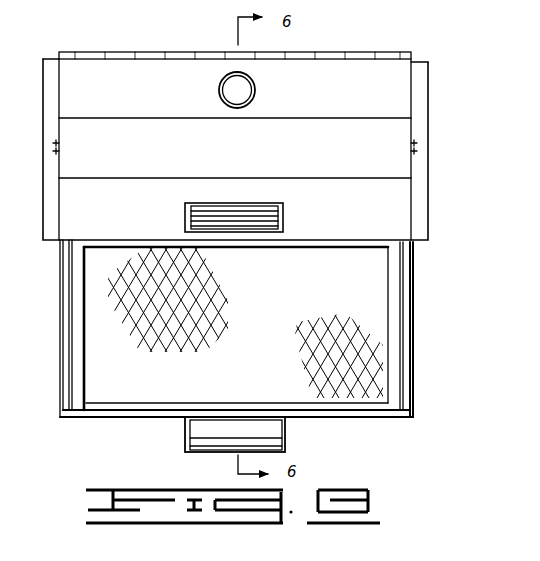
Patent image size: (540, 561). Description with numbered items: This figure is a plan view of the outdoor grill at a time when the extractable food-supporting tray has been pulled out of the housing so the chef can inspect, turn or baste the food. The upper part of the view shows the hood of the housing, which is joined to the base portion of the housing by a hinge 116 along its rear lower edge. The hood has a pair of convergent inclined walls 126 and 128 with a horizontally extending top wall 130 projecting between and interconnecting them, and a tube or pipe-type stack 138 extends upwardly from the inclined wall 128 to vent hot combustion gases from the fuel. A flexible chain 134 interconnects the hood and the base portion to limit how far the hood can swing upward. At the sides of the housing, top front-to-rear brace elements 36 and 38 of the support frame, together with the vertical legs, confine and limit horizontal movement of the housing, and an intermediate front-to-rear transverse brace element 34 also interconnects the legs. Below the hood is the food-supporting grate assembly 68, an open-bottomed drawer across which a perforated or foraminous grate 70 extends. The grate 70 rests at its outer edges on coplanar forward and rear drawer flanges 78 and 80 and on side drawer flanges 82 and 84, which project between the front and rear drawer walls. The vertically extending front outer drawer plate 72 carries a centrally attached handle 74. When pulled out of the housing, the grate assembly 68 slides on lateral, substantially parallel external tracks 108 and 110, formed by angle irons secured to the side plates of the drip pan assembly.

The front-to-rear transverse brace element 34 is at (214, 149).
The top front-to-rear brace element 36 is at (50, 70).
The top front-to-rear brace element 38 is at (420, 72).
The hinge 116 is at (118, 52).
The stack 138 is at (224, 78).
The inclined wall 128 is at (352, 104).
The top wall 130 is at (233, 162).
The flexible chain 134 is at (415, 160).
The inclined wall 126 is at (126, 218).
The rear drawer flange 80 is at (352, 245).
The food-supporting grate assembly 68 is at (357, 310).
The grate 70 is at (148, 311).
The side drawer flange 84 is at (393, 292).
The side drawer flange 82 is at (78, 392).
The external track 108 is at (60, 378).
The forward drawer flange 78 is at (150, 408).
The front outer drawer plate 72 is at (345, 418).
The handle 74 is at (215, 442).
The external track 110 is at (410, 420).